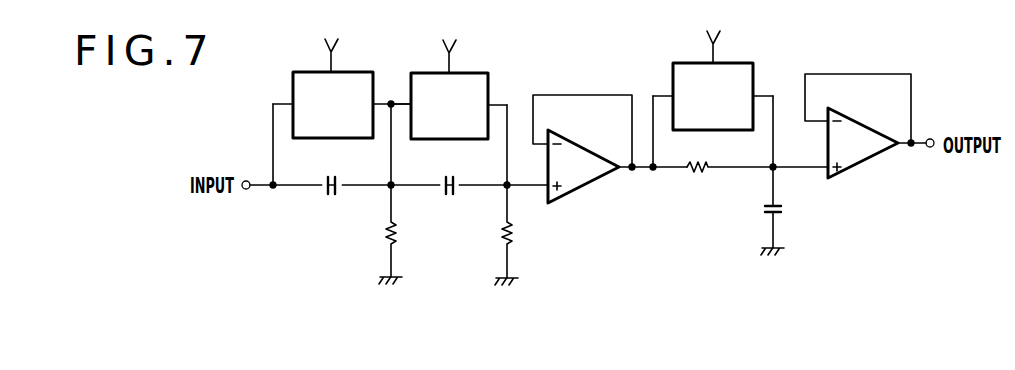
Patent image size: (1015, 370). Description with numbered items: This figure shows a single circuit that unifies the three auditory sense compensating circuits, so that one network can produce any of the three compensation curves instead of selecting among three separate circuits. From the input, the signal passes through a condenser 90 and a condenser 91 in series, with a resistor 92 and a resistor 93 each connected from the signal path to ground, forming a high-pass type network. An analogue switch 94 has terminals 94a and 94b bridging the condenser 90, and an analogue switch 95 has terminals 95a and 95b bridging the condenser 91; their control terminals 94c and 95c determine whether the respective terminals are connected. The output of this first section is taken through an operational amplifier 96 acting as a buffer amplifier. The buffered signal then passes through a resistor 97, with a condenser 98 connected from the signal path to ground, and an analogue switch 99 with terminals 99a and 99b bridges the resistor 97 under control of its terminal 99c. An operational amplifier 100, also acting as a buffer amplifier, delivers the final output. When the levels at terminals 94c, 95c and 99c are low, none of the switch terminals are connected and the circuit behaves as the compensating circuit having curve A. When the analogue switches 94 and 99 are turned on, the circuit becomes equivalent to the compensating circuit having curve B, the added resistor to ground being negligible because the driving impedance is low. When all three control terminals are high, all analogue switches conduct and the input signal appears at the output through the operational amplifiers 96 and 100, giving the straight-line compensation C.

The condenser 90 is at (331, 197).
The condenser 91 is at (450, 197).
The resistor 92 is at (394, 232).
The resistor 93 is at (513, 231).
The analogue switch 94 is at (334, 80).
The terminal of analogue switch 94a is at (292, 103).
The terminal of analogue switch 94b is at (374, 104).
The control terminal of analogue switch 94c is at (326, 72).
The analogue switch 95 is at (449, 102).
The terminal of analogue switch 95a is at (411, 108).
The terminal of analogue switch 95b is at (488, 108).
The control terminal of analogue switch 95c is at (445, 73).
The operational amplifier 96 is at (577, 188).
The resistor 97 is at (699, 181).
The condenser 98 is at (764, 214).
The analogue switch 99 is at (712, 76).
The terminal of analogue switch 99a is at (672, 95).
The terminal of analogue switch 99b is at (756, 95).
The control terminal of analogue switch 99c is at (738, 52).
The operational amplifier 100 is at (868, 160).